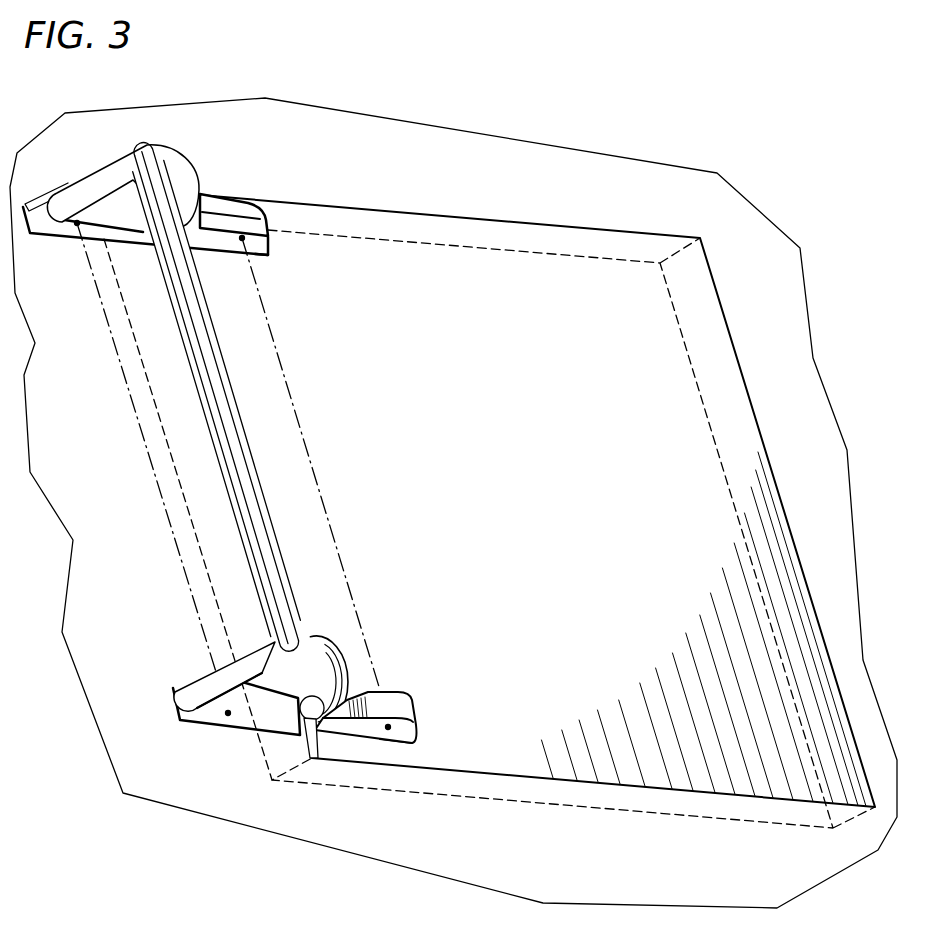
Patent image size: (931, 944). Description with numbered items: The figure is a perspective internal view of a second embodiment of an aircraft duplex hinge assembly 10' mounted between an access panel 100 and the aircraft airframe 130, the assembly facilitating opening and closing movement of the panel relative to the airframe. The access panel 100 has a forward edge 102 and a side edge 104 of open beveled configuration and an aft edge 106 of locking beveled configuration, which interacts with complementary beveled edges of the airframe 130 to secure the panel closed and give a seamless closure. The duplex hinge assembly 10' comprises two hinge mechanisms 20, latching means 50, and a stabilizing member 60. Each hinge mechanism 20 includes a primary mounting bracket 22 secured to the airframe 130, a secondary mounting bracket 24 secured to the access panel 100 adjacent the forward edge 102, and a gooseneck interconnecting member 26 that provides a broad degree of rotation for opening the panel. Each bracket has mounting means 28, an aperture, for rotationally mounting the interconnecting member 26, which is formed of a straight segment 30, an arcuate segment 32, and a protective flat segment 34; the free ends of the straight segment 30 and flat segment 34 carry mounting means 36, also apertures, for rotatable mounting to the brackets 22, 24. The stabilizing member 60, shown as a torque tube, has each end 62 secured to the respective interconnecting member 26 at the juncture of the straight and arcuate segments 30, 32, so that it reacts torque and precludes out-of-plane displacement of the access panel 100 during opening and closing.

The aircraft duplex hinge assembly 10' is at (228, 456).
The hinge mechanism 20 is at (244, 474).
The primary mounting bracket 22 is at (50, 242).
The secondary mounting bracket 24 is at (269, 257).
The interconnecting member 26 is at (193, 152).
The mounting means 28 is at (77, 226).
The straight segment 30 is at (237, 675).
The arcuate segment 32 is at (325, 653).
The protective flat segment 34 is at (378, 704).
The mounting means 36 is at (72, 212).
The latching means 50 is at (316, 752).
The stabilizing member 60 is at (243, 426).
The end of stabilizing member 62 is at (147, 150).
The access panel 100 is at (505, 494).
The forward edge 102 is at (212, 520).
The side edge 104 is at (413, 222).
The aft edge 106 is at (736, 424).
The aircraft airframe 130 is at (378, 837).